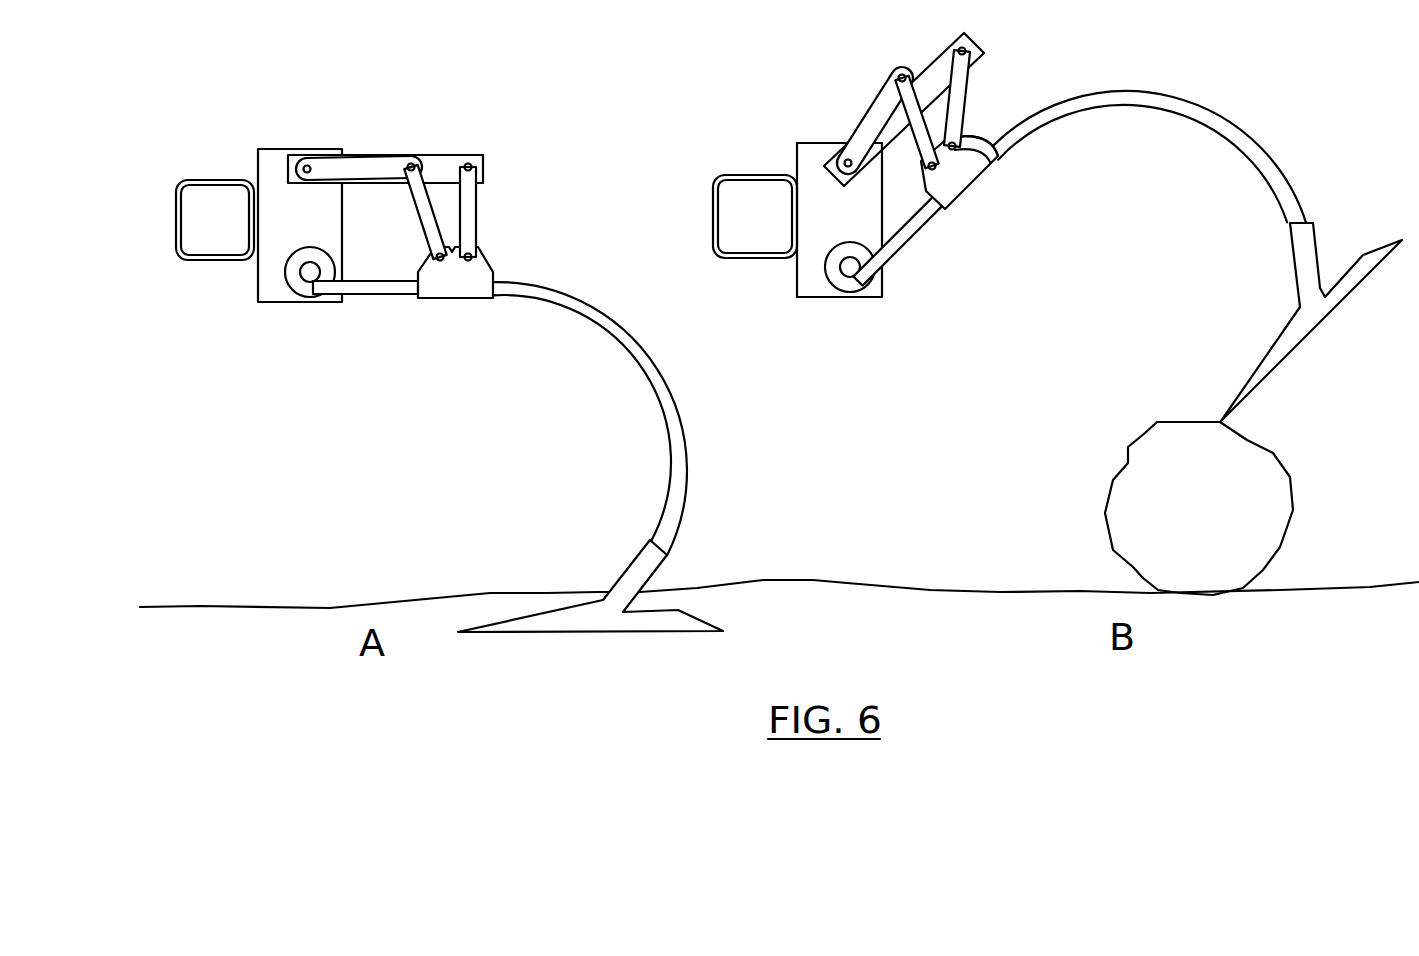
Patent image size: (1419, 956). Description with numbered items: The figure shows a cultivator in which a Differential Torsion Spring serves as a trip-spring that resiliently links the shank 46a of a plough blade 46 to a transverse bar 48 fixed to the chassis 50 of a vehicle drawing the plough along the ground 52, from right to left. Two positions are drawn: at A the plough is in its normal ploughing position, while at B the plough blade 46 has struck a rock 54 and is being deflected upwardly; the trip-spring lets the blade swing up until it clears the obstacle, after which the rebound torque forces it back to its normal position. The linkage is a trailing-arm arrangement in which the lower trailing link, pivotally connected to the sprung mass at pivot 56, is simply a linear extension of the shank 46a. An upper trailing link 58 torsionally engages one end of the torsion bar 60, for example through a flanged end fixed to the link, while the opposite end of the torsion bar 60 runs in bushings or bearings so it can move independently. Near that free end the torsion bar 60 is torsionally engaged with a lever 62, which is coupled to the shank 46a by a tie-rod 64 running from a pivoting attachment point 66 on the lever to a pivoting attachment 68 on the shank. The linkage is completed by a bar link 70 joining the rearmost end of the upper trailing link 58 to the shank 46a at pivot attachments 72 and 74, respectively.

The plough blade 46 is at (857, 361).
The shank 46a is at (382, 291).
The transverse bar 48 is at (267, 272).
The chassis 50 is at (217, 178).
The ground 52 is at (858, 633).
The rock 54 is at (1211, 518).
The pivot 56 is at (310, 276).
The upper trailing link 58 is at (449, 160).
The torsion bar 60 is at (307, 164).
The lever 62 is at (362, 172).
The tie-rod 64 is at (418, 199).
The pivoting attachment point 66 is at (410, 163).
The pivoting attachment 68 is at (448, 298).
The bar link 70 is at (473, 215).
The pivot attachment 72 is at (970, 48).
The pivot attachment 74 is at (990, 157).